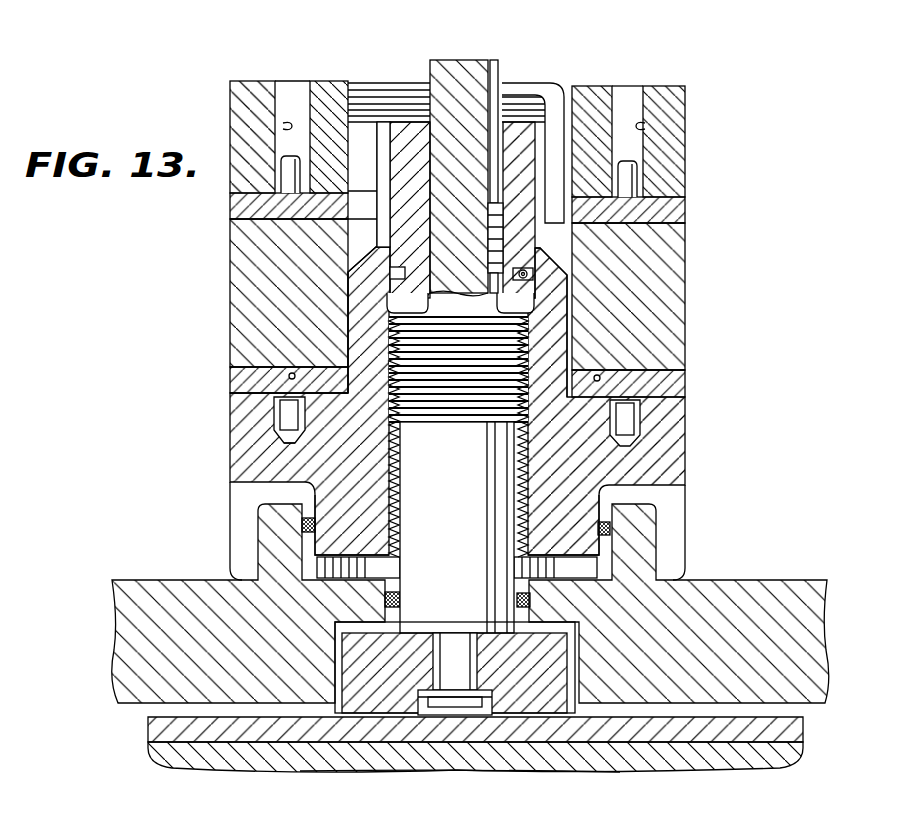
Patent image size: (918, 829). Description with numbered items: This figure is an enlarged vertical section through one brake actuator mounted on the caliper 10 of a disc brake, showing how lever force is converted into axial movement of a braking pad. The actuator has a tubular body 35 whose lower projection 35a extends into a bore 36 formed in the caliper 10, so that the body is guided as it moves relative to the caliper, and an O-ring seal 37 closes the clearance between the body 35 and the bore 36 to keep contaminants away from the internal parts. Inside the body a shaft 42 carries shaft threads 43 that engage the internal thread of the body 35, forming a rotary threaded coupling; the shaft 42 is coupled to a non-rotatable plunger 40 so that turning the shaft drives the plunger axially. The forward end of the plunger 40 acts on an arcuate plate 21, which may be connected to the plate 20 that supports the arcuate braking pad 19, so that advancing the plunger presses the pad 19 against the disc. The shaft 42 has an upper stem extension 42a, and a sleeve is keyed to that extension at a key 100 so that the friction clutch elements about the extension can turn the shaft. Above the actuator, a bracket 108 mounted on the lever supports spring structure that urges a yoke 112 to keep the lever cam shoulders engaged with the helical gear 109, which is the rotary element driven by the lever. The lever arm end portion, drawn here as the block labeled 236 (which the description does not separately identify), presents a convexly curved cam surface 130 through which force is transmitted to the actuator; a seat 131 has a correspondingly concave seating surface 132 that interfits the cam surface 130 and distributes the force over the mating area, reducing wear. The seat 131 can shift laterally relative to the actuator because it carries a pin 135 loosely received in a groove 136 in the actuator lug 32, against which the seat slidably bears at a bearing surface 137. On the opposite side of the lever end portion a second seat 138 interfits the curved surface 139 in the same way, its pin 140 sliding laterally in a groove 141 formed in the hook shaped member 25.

The caliper 10 is at (800, 585).
The arcuate braking part or pad 19 is at (510, 758).
The plate 20 is at (790, 735).
The arcuate plate 21 is at (550, 660).
The hook shaped member 25 is at (233, 97).
The actuator lug 32 is at (240, 468).
The tubular body 35 is at (560, 303).
The body projection 35a is at (583, 544).
The bore 36 is at (594, 582).
The O-ring seal 37 is at (302, 527).
The plunger 40 is at (457, 527).
The shaft 42 is at (392, 394).
The upper stem extension 42a is at (430, 72).
The shaft threads 43 is at (530, 410).
The key 100 is at (490, 237).
The bracket 108 is at (503, 95).
The helical gear 109 is at (513, 133).
The yoke 112 is at (553, 108).
The convexly curved cam surface 130 is at (292, 373).
The seat 131 is at (240, 377).
The concavely curved seating surface 132 is at (243, 358).
The pin 135 is at (288, 414).
The groove 136 is at (288, 441).
The bearing surface 137 is at (240, 386).
The second seat 138 is at (240, 207).
The curved surface 139 is at (243, 222).
The pin 140 is at (292, 180).
The groove 141 is at (283, 126).
The outer body 236 is at (236, 285).